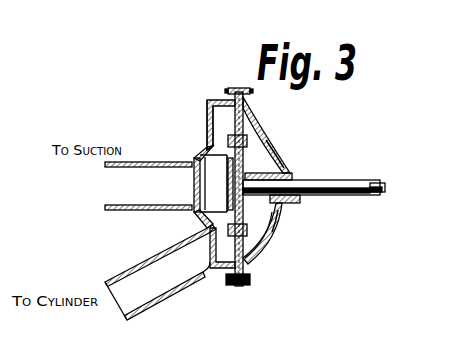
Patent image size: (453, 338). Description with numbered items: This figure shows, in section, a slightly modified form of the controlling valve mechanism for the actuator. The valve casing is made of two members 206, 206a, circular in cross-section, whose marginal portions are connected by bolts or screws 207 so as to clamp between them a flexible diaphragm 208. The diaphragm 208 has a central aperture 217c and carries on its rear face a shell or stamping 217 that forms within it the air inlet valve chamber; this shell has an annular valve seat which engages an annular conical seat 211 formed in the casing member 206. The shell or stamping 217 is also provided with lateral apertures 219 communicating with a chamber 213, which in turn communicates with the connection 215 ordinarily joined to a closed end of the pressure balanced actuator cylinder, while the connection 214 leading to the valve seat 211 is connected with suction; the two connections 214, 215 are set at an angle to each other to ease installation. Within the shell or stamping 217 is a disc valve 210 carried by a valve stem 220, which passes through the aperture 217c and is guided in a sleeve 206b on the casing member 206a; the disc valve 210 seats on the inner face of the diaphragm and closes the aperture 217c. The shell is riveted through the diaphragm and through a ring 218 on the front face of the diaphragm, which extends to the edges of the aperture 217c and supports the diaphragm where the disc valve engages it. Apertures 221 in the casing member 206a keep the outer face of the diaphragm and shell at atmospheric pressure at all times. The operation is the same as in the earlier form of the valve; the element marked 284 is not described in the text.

The casing member 206 is at (207, 103).
The casing member 206a is at (260, 128).
The sleeve 206b is at (283, 200).
The bolts or screws 207 is at (228, 89).
The diaphragm 208 is at (250, 114).
The disc valve 210 is at (196, 216).
The annular conical seat 211 is at (199, 153).
The chamber 213 is at (223, 286).
The tubular connection 214 is at (118, 180).
The tubular connection 215 is at (140, 276).
The shell or stamping 217 is at (206, 142).
The central aperture 217c is at (246, 173).
The ring 218 is at (250, 256).
The lateral apertures 219 is at (207, 116).
The valve stem 220 is at (323, 195).
The apertures 221 is at (272, 146).
The rod end 284 is at (390, 165).